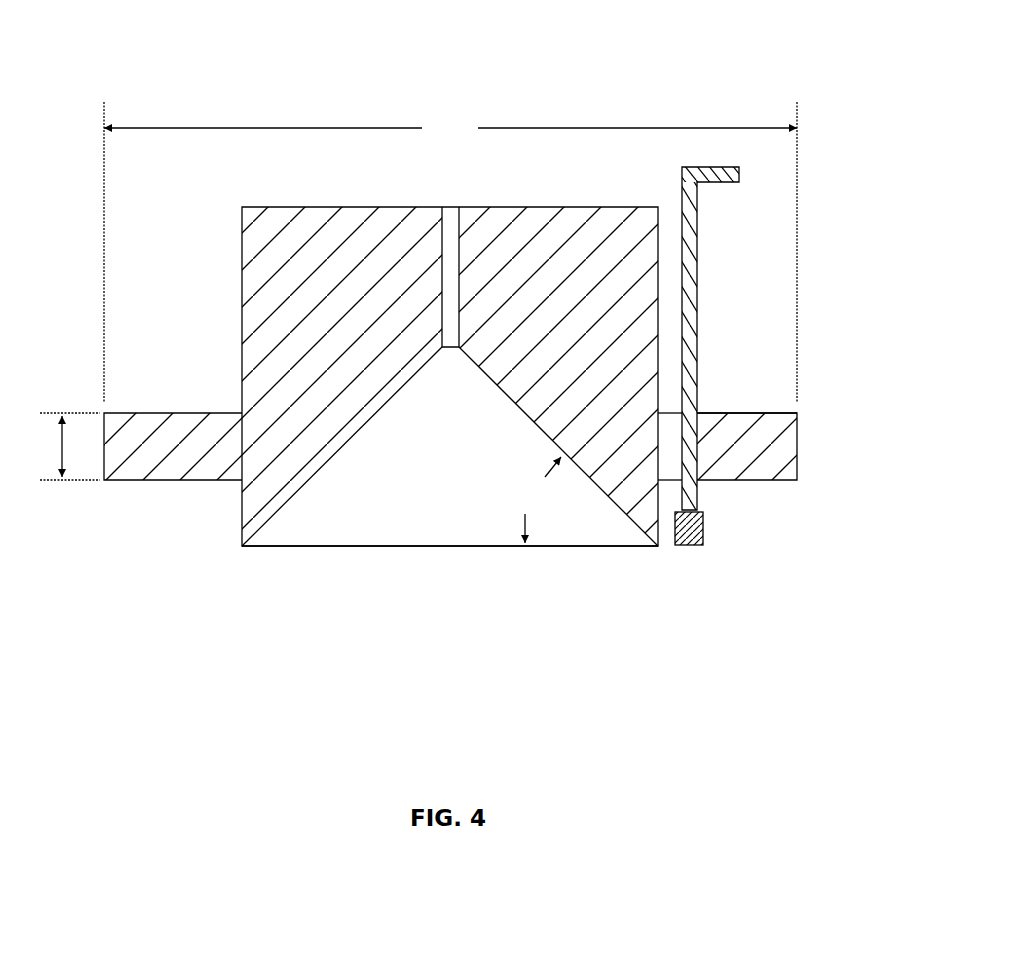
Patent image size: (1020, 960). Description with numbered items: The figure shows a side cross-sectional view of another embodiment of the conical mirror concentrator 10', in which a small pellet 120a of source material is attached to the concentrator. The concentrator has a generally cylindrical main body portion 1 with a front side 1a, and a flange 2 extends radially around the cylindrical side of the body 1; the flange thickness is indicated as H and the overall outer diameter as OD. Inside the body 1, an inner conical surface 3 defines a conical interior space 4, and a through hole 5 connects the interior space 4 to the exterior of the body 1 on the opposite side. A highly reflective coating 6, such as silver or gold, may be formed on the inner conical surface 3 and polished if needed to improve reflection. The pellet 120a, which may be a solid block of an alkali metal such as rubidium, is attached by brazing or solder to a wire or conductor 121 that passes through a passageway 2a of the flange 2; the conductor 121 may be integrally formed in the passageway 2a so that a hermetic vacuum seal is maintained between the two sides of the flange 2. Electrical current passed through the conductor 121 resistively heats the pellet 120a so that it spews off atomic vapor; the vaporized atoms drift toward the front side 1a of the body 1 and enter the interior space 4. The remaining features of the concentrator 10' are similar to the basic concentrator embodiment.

The conical mirror concentrator 10' is at (466, 358).
The main body portion 1 is at (422, 424).
The front side 1a is at (568, 551).
The flange 2 is at (479, 418).
The passageway 2a is at (710, 416).
The inner conical surface 3 is at (312, 496).
The highly reflective coating 6 is at (277, 512).
The conical interior space 4 is at (547, 446).
The through hole 5 is at (462, 205).
The wire or conductor 121 is at (731, 176).
The pellet 120a is at (692, 549).